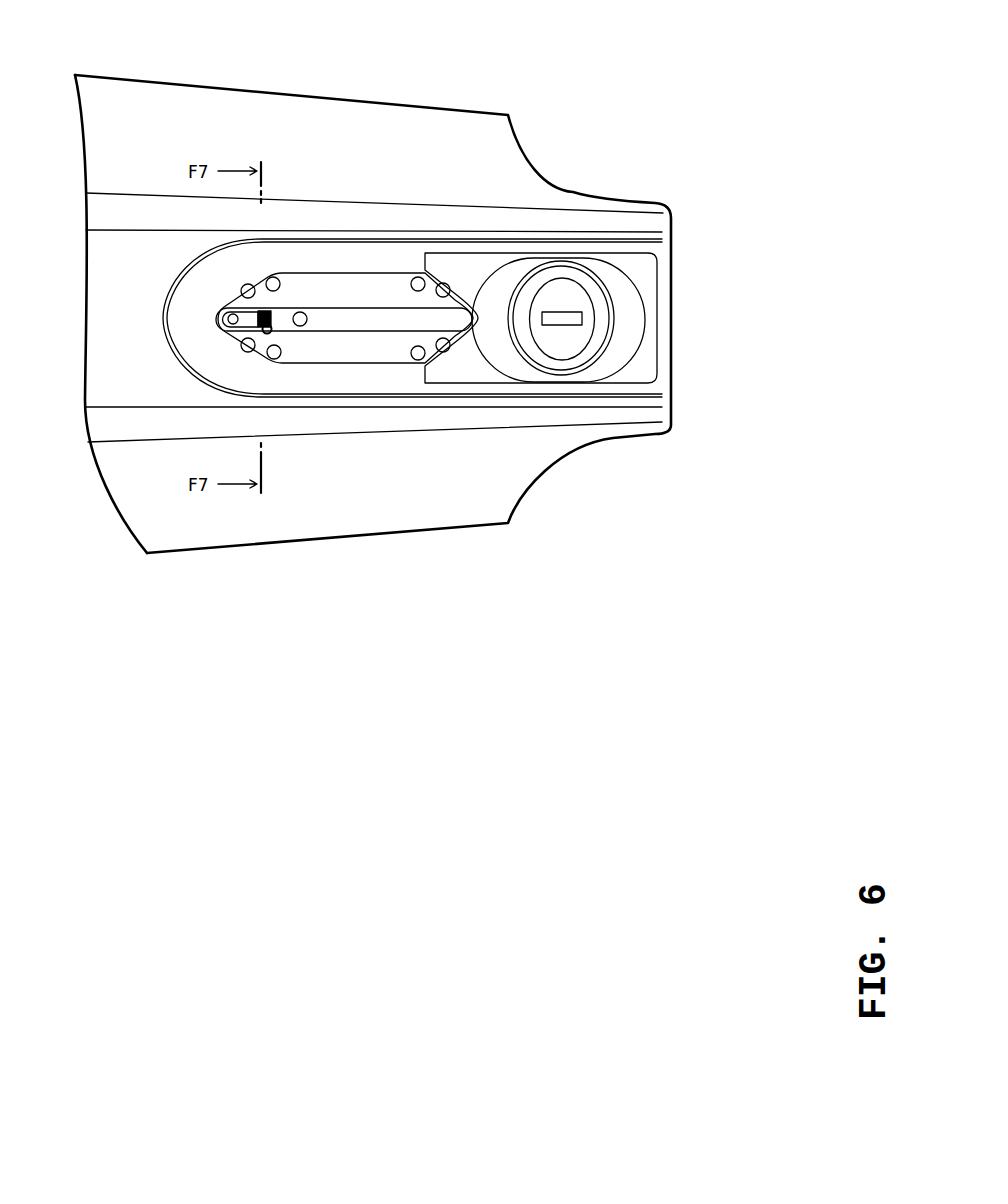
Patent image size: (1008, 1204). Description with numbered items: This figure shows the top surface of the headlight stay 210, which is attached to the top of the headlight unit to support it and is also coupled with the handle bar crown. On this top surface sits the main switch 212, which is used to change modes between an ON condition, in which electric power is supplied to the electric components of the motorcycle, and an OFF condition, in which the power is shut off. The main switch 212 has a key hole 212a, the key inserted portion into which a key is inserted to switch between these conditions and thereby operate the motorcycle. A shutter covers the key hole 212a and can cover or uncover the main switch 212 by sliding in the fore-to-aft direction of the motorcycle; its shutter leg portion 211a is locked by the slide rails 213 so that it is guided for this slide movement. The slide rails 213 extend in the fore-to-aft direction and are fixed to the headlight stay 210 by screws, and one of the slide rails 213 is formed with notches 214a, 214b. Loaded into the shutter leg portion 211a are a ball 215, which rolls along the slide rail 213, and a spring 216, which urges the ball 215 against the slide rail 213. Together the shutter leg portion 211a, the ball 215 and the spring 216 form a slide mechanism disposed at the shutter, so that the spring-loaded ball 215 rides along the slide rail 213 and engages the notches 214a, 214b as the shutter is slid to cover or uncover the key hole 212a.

The headlight stay 210 is at (255, 108).
The shutter leg portion 211a is at (288, 325).
The main switch 212 is at (620, 297).
The key hole 212a is at (571, 312).
The slide rails 213 is at (358, 353).
The notch 214a is at (262, 332).
The notch 214b is at (430, 336).
The ball 215 is at (215, 327).
The spring 216 is at (258, 313).